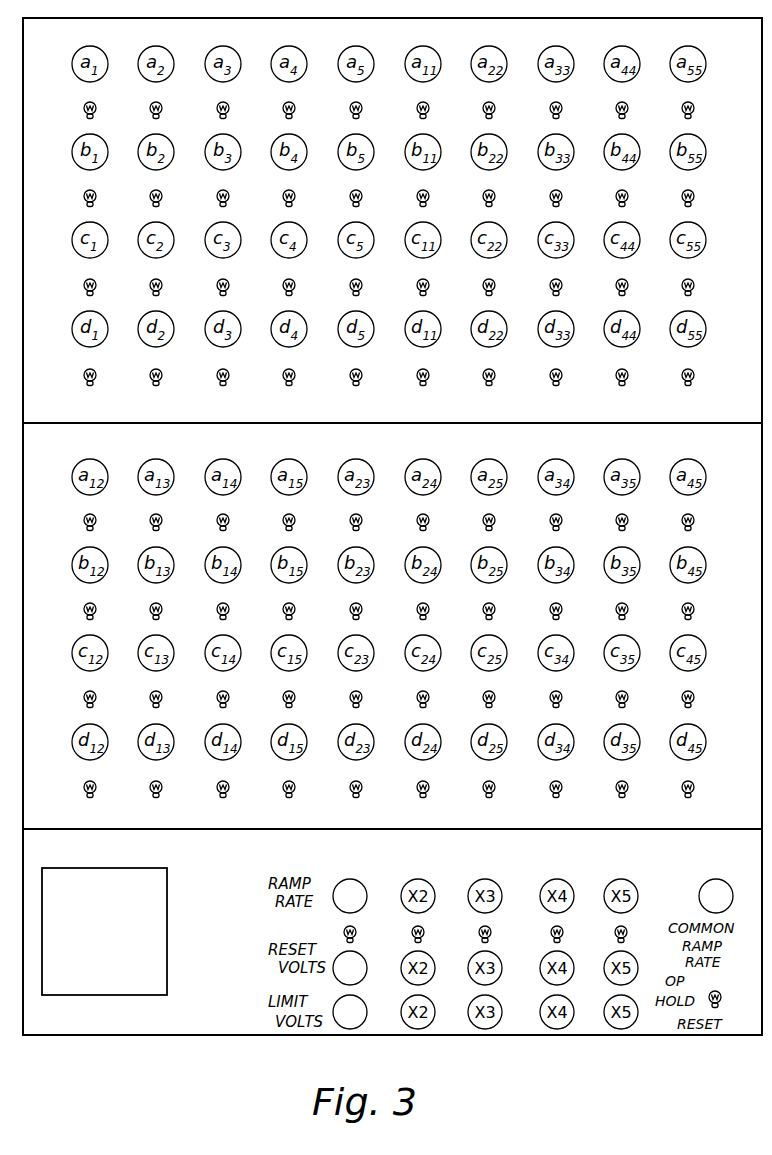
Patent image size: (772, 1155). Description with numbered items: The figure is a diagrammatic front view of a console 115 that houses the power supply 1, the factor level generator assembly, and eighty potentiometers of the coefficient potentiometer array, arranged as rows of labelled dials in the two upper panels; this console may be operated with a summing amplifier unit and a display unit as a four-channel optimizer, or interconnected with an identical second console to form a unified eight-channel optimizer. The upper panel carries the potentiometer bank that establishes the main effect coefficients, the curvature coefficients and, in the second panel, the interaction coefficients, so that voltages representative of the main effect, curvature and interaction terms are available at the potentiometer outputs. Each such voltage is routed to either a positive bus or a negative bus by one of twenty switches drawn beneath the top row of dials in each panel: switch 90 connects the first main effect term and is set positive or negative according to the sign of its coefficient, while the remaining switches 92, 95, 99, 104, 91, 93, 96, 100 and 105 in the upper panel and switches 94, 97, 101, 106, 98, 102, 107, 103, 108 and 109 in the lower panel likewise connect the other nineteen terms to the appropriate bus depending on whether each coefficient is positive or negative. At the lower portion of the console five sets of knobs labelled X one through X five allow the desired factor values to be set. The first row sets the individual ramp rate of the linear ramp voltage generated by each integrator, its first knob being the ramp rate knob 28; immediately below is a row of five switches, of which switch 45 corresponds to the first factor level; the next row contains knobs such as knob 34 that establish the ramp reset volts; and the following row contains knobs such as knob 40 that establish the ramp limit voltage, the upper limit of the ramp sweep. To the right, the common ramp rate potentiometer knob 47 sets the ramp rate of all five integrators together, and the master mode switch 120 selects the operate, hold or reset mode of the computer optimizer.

The power supply 1 is at (113, 876).
The console 115 is at (150, 1023).
The ramp rate knob 28 is at (363, 882).
The switch 45 is at (357, 931).
The ramp reset volts knob 34 is at (363, 958).
The ramp limit volts knob 40 is at (363, 1000).
The common ramp rate potentiometer knob 47 is at (715, 880).
The master mode switch 120 is at (712, 992).
The switch 90 is at (96, 106).
The switch 92 is at (162, 106).
The switch 95 is at (229, 106).
The switch 99 is at (295, 106).
The switch 104 is at (362, 106).
The switch 91 is at (429, 106).
The switch 93 is at (495, 106).
The switch 96 is at (562, 106).
The switch 100 is at (628, 106).
The switch 105 is at (694, 106).
The switch 94 is at (96, 518).
The switch 97 is at (162, 518).
The switch 101 is at (229, 518).
The switch 106 is at (295, 518).
The switch 98 is at (362, 518).
The switch 102 is at (429, 518).
The switch 107 is at (495, 518).
The switch 103 is at (562, 518).
The switch 108 is at (628, 518).
The switch 109 is at (694, 518).